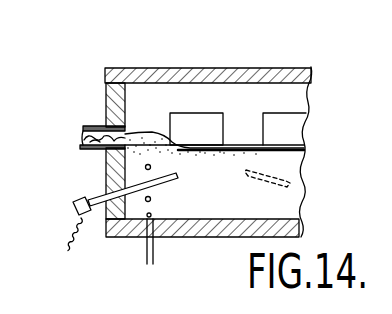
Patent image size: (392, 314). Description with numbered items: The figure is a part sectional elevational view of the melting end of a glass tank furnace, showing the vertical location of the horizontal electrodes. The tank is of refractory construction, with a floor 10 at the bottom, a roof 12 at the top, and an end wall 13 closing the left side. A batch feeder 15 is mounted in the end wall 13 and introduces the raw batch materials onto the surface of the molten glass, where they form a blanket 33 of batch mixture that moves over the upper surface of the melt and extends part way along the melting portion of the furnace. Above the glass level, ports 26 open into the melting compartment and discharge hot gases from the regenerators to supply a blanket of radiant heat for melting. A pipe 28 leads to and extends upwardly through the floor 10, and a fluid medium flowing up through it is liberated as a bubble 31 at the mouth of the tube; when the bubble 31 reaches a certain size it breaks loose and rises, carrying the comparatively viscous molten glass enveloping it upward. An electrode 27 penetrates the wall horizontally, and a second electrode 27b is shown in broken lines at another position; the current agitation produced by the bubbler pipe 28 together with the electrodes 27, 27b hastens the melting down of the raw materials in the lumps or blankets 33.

The floor 10 is at (183, 154).
The roof 12 is at (221, 68).
The end wall 13 is at (108, 89).
The batch feeder 15 is at (88, 126).
The ports 26 is at (273, 126).
The electrode 27 is at (79, 199).
The electrode 27b is at (282, 177).
The pipe 28 is at (146, 257).
The bubble 31 is at (151, 199).
The blanket 33 is at (147, 133).